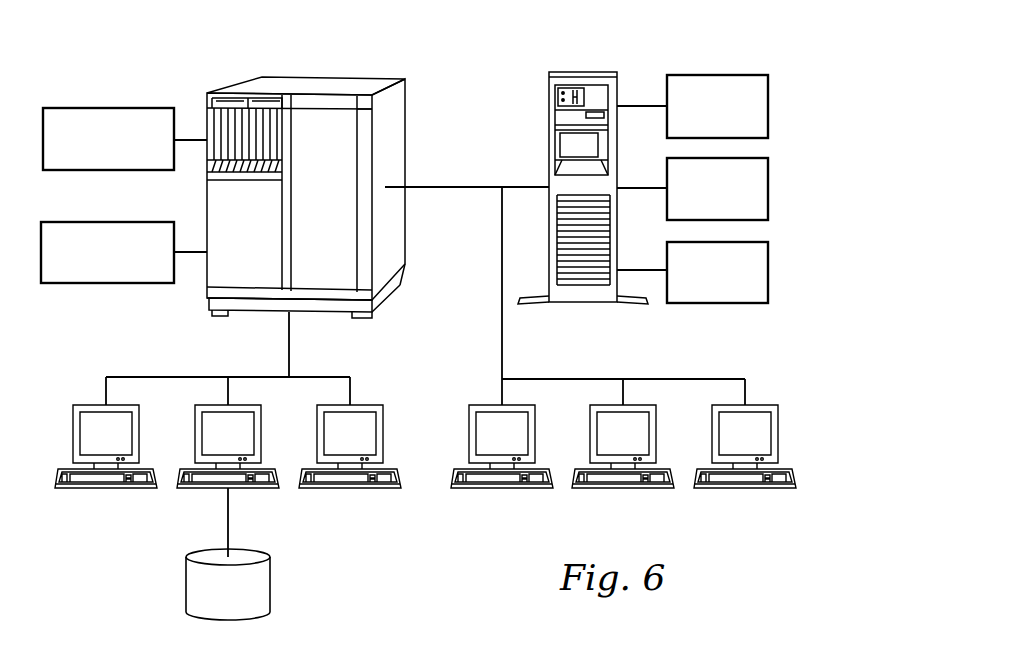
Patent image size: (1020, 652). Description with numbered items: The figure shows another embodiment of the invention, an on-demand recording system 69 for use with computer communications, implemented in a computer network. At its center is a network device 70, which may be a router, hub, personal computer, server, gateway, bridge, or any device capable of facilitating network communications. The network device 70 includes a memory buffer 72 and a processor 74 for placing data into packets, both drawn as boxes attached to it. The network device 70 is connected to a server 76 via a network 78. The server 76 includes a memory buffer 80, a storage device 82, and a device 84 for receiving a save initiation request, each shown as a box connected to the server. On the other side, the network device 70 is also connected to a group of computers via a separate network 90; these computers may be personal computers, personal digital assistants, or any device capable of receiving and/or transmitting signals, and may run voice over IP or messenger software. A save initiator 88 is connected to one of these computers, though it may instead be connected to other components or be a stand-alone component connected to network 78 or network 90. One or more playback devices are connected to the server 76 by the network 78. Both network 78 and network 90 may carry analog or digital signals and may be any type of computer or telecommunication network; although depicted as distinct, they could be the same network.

The on-demand recording system 69 is at (499, 68).
The network device 70 is at (333, 77).
The memory buffer 72 is at (108, 107).
The processor 74 is at (107, 284).
The server 76 is at (584, 70).
The network 78 is at (501, 313).
The memory buffer 80 is at (770, 105).
The storage device 82 is at (770, 187).
The device for receiving a save initiation request 84 is at (770, 270).
The save initiator 88 is at (185, 585).
The network 90 is at (288, 342).